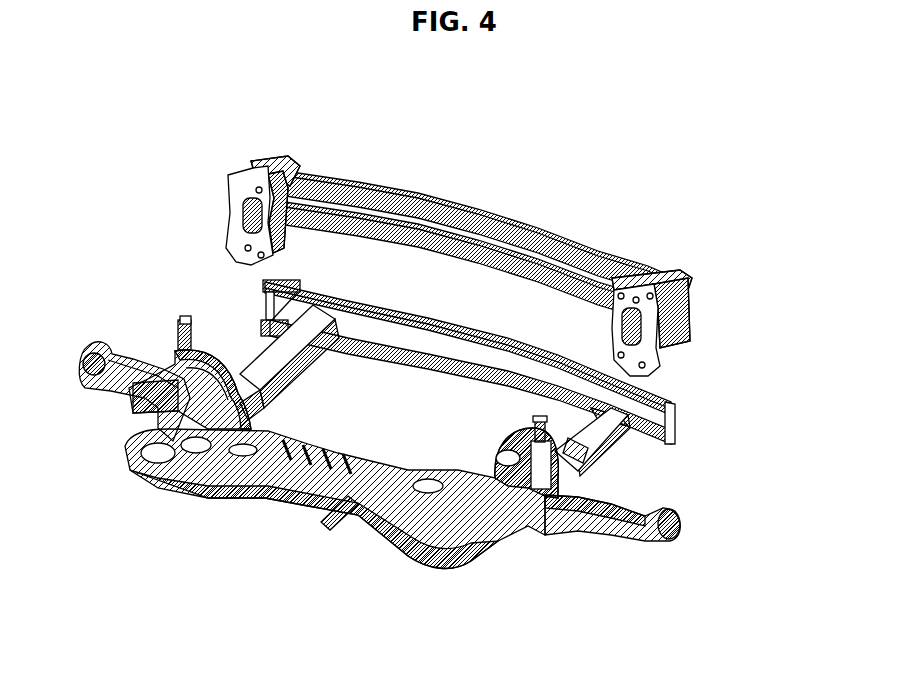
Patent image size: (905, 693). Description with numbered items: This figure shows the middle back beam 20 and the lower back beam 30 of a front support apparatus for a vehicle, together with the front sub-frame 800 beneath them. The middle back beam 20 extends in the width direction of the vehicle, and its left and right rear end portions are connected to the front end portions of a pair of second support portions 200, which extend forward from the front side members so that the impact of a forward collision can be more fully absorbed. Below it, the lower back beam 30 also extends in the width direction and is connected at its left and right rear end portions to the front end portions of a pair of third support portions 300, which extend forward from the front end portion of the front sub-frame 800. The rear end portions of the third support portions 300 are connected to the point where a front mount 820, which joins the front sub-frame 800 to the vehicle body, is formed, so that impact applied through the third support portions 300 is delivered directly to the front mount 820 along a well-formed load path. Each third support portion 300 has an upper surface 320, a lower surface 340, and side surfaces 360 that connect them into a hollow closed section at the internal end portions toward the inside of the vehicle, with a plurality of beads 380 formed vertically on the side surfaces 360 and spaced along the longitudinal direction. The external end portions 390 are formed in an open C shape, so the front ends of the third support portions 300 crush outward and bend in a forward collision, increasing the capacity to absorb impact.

The middle back beam 20 is at (495, 237).
The lower back beam 30 is at (545, 375).
The second support portion 200 is at (663, 338).
The third support portion 300 is at (247, 343).
The upper surface 320 is at (557, 425).
The lower surface 340 is at (567, 465).
The side surface 360 is at (264, 380).
The bead 380 is at (338, 324).
The external end portion 390 is at (570, 433).
The front sub-frame 800 is at (348, 470).
The front mount 820 is at (522, 500).